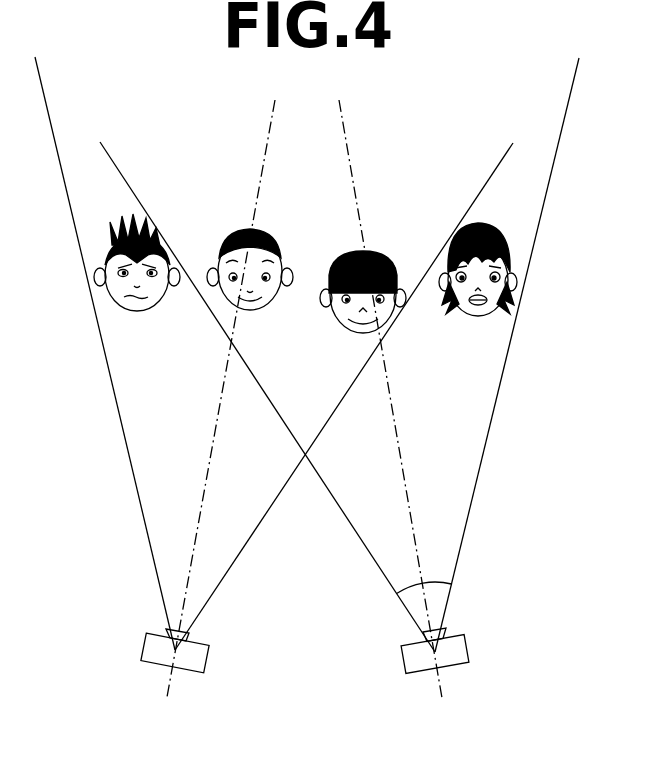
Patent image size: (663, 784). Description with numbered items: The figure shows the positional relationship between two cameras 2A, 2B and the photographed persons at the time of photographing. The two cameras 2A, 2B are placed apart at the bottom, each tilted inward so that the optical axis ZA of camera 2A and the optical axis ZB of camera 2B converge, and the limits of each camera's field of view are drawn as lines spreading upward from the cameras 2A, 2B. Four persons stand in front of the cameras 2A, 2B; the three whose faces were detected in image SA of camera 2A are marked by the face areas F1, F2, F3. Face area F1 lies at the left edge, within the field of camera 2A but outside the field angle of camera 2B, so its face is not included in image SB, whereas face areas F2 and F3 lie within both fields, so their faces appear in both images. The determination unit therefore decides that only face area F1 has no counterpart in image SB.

The face area F1 is at (111, 237).
The face area F2 is at (233, 226).
The face area F3 is at (388, 260).
The optical axis of camera 2A ZA is at (266, 148).
The optical axis of camera 2B ZB is at (350, 145).
The camera 2A is at (142, 651).
The camera 2B is at (468, 653).